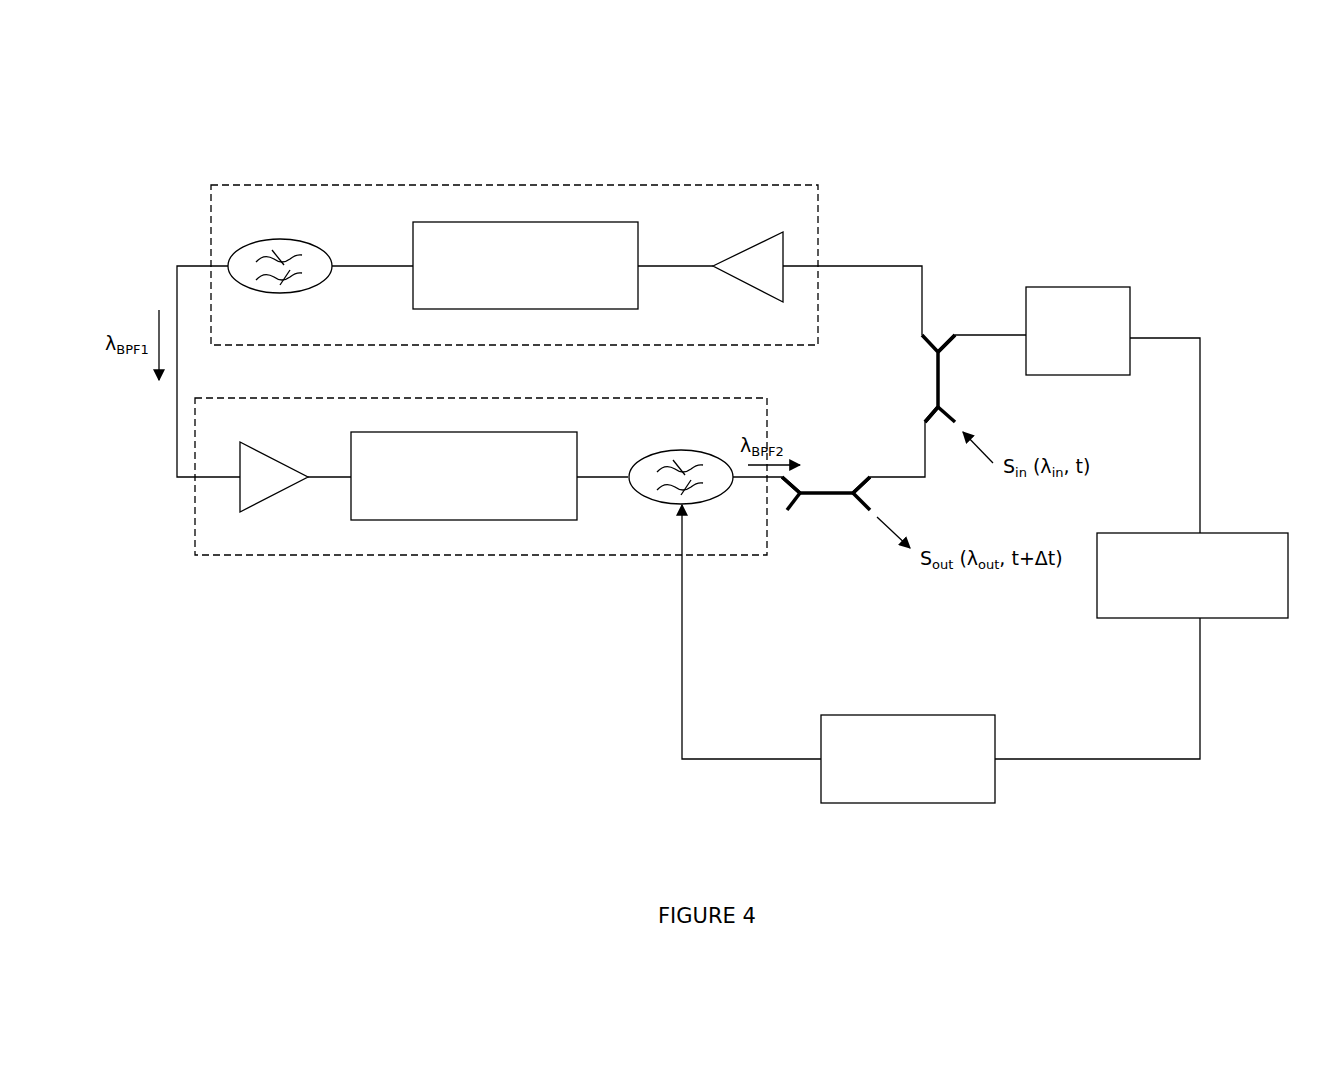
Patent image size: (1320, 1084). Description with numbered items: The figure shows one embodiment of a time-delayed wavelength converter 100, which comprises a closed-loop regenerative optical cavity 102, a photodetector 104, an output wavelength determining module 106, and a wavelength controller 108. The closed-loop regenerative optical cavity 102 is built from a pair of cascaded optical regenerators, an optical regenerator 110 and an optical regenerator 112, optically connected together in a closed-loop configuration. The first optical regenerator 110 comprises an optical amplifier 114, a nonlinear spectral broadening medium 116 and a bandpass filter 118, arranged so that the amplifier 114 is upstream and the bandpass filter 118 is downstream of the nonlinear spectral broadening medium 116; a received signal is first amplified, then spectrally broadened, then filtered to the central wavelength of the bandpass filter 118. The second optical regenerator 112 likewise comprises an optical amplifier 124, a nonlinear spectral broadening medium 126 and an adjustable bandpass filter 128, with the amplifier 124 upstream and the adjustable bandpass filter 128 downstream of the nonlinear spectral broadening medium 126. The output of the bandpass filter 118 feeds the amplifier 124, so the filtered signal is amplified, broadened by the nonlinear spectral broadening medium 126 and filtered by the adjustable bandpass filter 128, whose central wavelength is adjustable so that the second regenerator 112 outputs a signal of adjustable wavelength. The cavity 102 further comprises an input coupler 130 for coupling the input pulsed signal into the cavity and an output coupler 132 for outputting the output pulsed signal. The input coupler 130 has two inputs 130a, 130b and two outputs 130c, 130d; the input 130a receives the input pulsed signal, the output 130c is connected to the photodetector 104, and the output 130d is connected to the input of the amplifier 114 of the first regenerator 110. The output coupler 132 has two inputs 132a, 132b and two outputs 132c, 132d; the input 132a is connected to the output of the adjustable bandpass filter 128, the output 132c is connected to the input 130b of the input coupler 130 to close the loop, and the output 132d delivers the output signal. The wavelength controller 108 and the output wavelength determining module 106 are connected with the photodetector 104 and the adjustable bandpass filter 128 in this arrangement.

The time-delayed wavelength converter 100 is at (1165, 157).
The closed-loop regenerative optical cavity 102 is at (940, 200).
The photodetector 104 is at (1113, 305).
The output wavelength determining module 106 is at (1237, 608).
The wavelength controller 108 is at (978, 795).
The optical regenerator 110 is at (573, 185).
The optical regenerator 112 is at (502, 560).
The optical amplifier 114 is at (765, 272).
The nonlinear spectral broadening medium 116 is at (420, 232).
The bandpass filter 118 is at (313, 257).
The optical amplifier 124 is at (263, 468).
The nonlinear spectral broadening medium 126 is at (368, 502).
The adjustable bandpass filter 128 is at (645, 465).
The input coupler 130 is at (936, 383).
The input 130a is at (948, 412).
The input 130b is at (932, 418).
The output 130c is at (947, 350).
The output 130d is at (930, 340).
The output coupler 132 is at (824, 504).
The input 132a is at (797, 470).
The input 132b is at (787, 505).
The output 132c is at (872, 482).
The output 132d is at (868, 510).